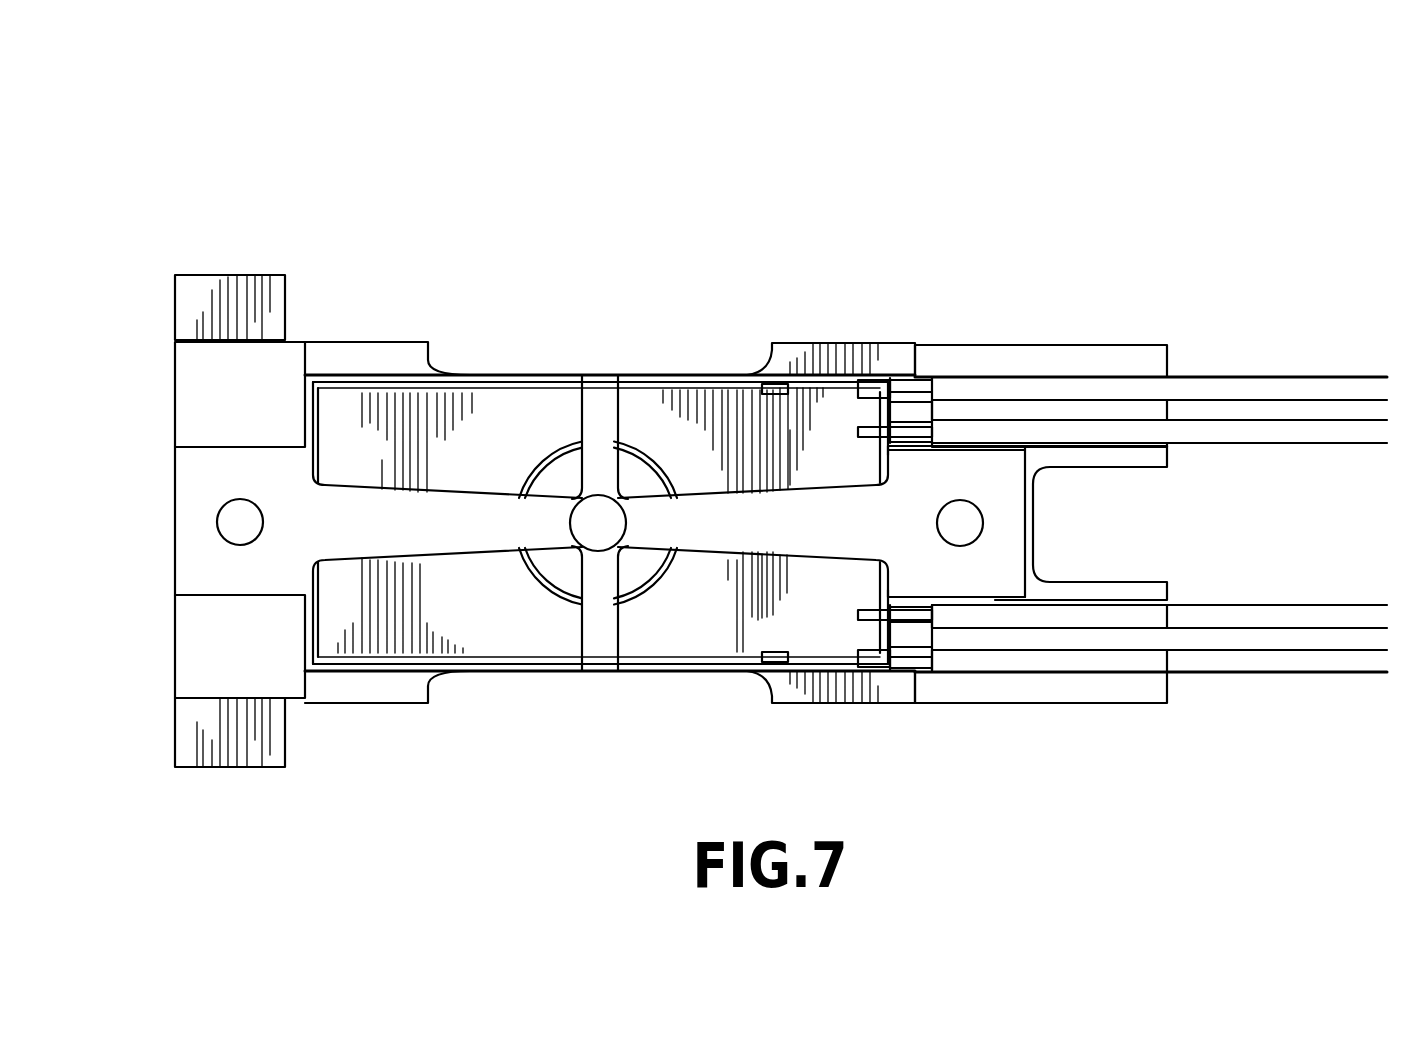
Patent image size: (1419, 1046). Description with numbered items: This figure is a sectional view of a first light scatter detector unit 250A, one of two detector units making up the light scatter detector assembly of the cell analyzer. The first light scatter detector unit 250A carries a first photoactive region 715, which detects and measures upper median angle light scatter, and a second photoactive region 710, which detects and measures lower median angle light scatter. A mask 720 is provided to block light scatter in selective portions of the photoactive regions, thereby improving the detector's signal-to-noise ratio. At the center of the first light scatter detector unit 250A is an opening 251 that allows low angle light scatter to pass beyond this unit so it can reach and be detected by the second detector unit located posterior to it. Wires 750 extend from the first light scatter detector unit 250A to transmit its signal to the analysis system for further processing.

The first light scatter detector unit 250A is at (812, 200).
The second photoactive region 710 is at (565, 470).
The first photoactive region 715 is at (717, 447).
The mask 720 is at (710, 528).
The opening 251 is at (588, 530).
The wires 750 is at (1227, 430).